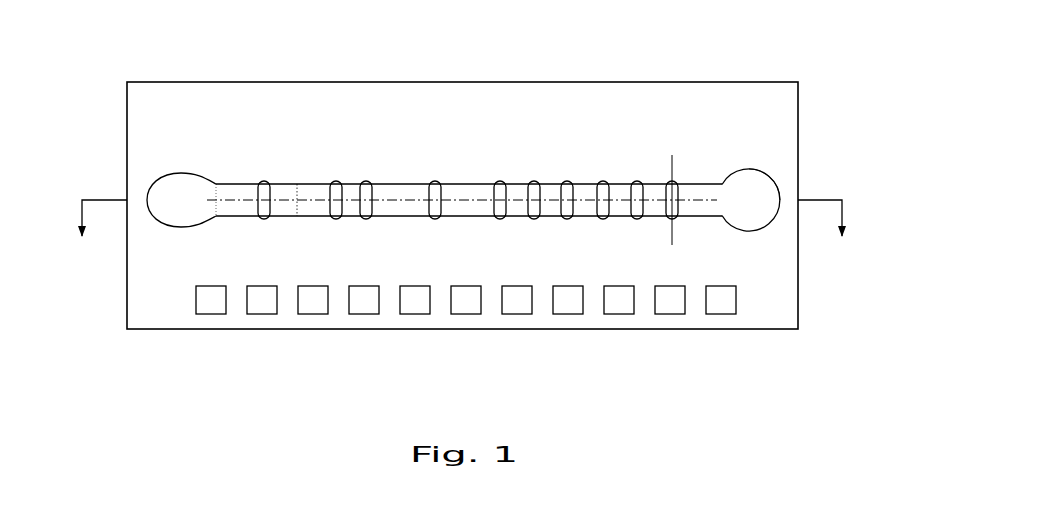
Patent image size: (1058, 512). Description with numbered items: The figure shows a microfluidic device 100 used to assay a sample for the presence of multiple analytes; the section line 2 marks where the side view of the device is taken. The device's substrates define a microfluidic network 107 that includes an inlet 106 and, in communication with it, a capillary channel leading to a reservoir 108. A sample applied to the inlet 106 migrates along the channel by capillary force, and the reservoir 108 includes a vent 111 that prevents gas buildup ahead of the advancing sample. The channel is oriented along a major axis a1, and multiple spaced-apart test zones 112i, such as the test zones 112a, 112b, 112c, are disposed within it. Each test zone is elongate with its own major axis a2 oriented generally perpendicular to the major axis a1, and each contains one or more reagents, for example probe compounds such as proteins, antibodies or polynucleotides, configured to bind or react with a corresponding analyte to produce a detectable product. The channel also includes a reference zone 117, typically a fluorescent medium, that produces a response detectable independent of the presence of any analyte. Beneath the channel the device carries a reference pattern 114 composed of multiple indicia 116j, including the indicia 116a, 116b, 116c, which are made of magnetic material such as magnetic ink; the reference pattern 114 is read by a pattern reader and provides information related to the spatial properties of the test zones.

The side view section 2 is at (108, 198).
The microfluidic device 100 is at (800, 233).
The inlet 106 is at (178, 196).
The microfluidic network 107 is at (621, 179).
The reservoir 108 is at (745, 183).
The vent 111 is at (752, 190).
The test zone 112a is at (297, 187).
The test zone 112b is at (336, 183).
The test zone 112c is at (366, 183).
The test zones 112i is at (500, 182).
The reference pattern 114 is at (438, 316).
The indicium 116a is at (211, 316).
The indicium 116b is at (262, 316).
The indicium 116c is at (314, 316).
The indicia 116j is at (725, 316).
The reference zone 117 is at (262, 183).
The major axis of channel a1 is at (297, 216).
The major axis of test zone a2 is at (675, 165).